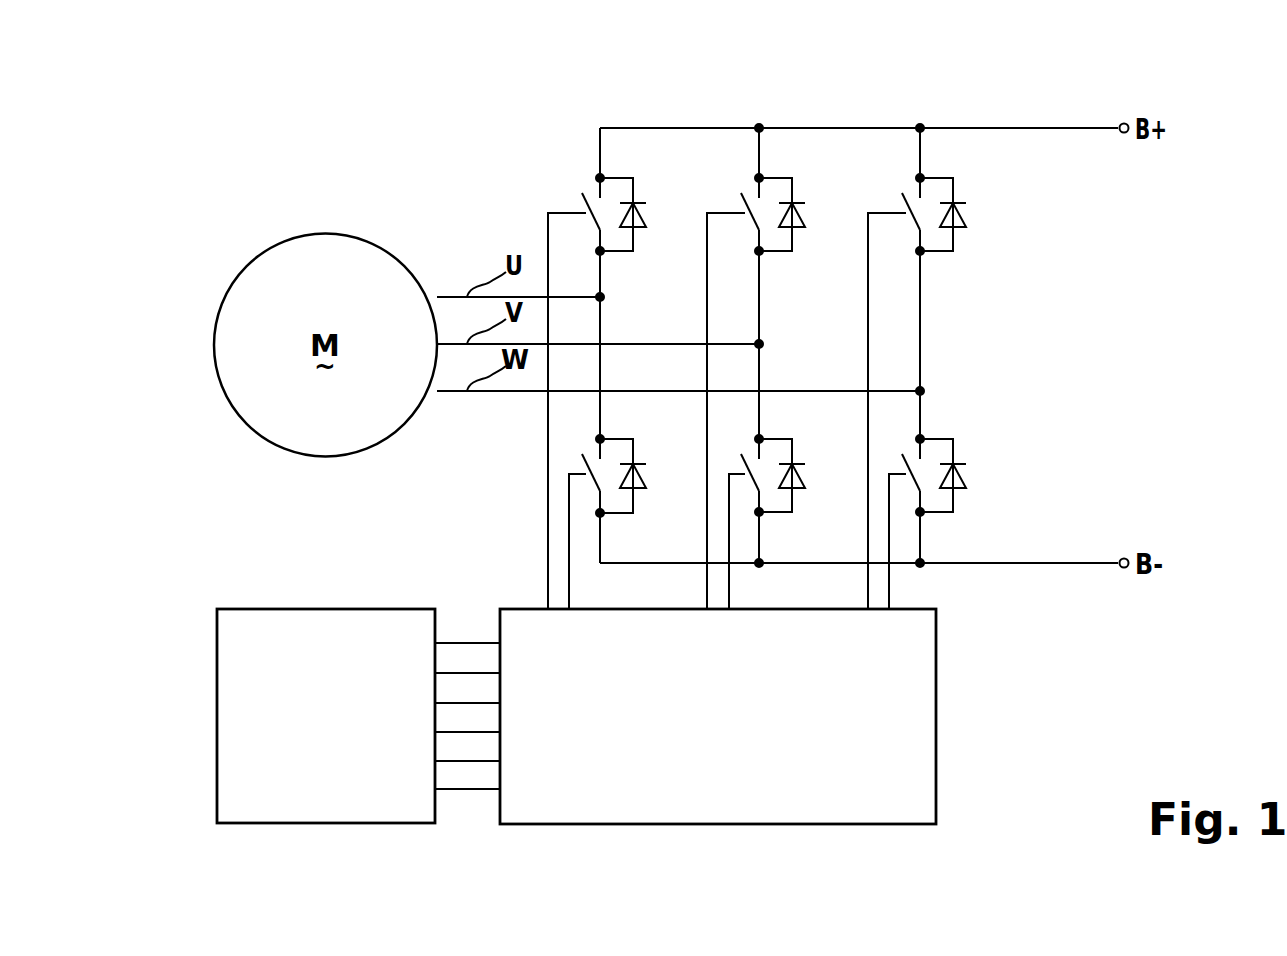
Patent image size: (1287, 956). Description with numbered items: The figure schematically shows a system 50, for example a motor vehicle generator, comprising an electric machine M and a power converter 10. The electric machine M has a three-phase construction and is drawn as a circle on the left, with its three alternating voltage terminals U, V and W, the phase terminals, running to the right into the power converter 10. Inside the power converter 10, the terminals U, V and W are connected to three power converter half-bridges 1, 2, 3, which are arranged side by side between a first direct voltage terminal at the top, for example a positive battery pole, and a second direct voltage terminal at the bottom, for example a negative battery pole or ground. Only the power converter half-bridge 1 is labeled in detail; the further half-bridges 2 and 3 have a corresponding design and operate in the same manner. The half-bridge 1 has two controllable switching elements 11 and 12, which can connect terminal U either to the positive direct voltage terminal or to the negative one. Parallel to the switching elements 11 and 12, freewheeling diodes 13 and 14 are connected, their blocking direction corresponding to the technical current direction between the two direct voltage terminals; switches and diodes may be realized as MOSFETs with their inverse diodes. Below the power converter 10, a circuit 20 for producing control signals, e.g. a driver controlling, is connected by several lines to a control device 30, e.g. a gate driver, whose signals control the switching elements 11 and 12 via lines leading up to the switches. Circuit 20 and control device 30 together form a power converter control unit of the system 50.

The power converter half-bridge 1 is at (664, 174).
The power converter half-bridge 2 is at (824, 174).
The power converter half-bridge 3 is at (984, 174).
The power converter 10 is at (620, 87).
The controllable switching element 11 is at (585, 193).
The controllable switching element 12 is at (585, 455).
The freewheeling diode 13 is at (644, 212).
The freewheeling diode 14 is at (644, 474).
The circuit for producing control signals 20 is at (217, 717).
The control device 30 is at (936, 716).
The system 50 is at (1082, 692).